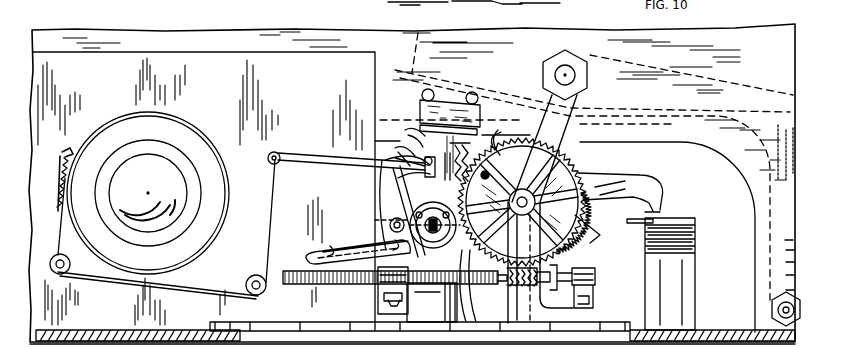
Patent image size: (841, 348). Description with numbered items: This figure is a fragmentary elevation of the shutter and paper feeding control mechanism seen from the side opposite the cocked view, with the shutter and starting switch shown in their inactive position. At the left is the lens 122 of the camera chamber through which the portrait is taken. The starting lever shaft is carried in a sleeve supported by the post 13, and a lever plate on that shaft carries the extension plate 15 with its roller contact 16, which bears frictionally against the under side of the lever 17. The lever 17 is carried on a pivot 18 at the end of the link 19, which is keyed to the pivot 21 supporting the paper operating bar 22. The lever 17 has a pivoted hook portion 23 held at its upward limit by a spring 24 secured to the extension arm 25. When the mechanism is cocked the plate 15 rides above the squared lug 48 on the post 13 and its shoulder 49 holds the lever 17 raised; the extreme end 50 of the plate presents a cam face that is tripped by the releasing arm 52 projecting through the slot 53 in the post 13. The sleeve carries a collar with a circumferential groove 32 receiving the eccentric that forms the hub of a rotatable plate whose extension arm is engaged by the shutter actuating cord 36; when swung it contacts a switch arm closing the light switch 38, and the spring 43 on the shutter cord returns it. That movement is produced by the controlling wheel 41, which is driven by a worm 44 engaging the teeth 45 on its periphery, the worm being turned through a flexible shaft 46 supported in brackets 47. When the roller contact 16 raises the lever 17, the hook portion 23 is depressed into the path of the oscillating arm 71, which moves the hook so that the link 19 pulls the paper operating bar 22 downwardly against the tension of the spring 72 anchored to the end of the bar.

The lens 122 is at (150, 165).
The spring 43 is at (58, 194).
The shutter actuating cord 36 is at (313, 159).
The pivot 18 is at (366, 233).
The roller contact 16 is at (390, 224).
The releasing arm 52 is at (417, 200).
The extension plate 15 is at (398, 190).
The squared lug 48 is at (395, 160).
The shoulder 49 is at (398, 178).
The extreme end of plate 50 is at (395, 148).
The slot 53 is at (410, 141).
The light switch 38 is at (443, 110).
The post 13 is at (476, 141).
The spring 24 is at (500, 148).
The lever 17 is at (484, 232).
The circumferential groove 32 is at (491, 176).
The controlling wheel 41 is at (575, 244).
The link 19 is at (542, 199).
The worm 44 is at (535, 287).
The pivot 21 is at (567, 72).
The paper operating bar 22 is at (742, 93).
The extension arm 25 is at (588, 174).
The pivoted hook portion 23 is at (662, 186).
The teeth 45 is at (596, 238).
The oscillating arm 71 is at (660, 274).
The flexible shaft 46 is at (482, 282).
The brackets 47 is at (382, 290).
The spring 72 is at (786, 309).